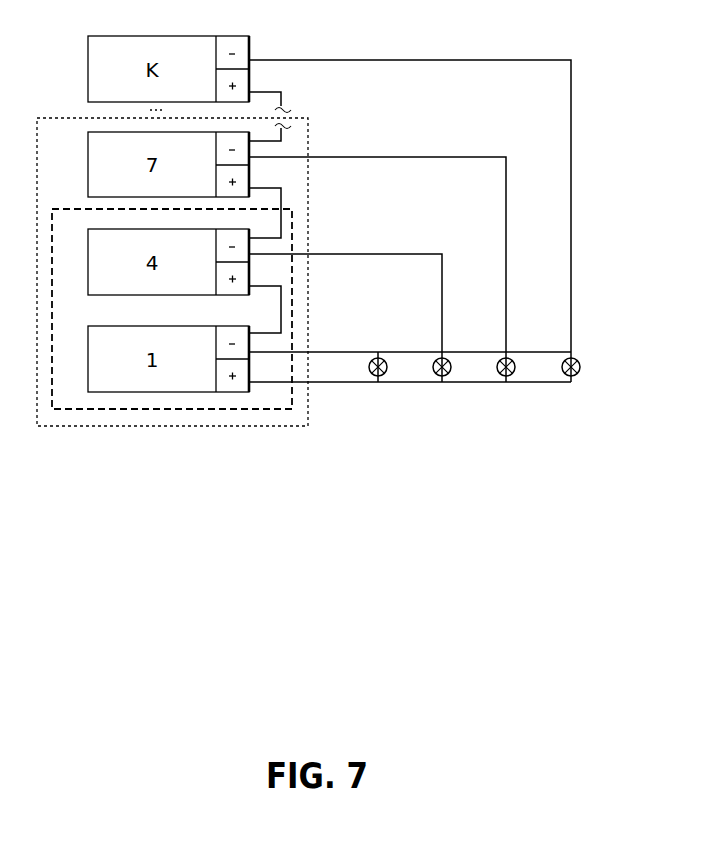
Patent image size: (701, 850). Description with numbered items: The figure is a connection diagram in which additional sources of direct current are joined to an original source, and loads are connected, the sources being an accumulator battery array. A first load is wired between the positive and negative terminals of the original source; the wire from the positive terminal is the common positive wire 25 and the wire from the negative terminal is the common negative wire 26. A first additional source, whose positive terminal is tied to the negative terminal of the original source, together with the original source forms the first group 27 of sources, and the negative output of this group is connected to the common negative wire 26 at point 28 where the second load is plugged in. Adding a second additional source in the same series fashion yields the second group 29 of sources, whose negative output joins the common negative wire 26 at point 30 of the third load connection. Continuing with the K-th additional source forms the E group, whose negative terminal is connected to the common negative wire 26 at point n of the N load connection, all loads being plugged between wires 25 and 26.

The common positive wire 25 is at (321, 386).
The common negative wire 26 is at (330, 350).
The first group of sources 27 is at (105, 407).
The point of connection of the second load 28 is at (446, 350).
The second group of sources 29 is at (193, 426).
The point of connection of the third load 30 is at (511, 350).
The point of connection of N load n is at (575, 350).